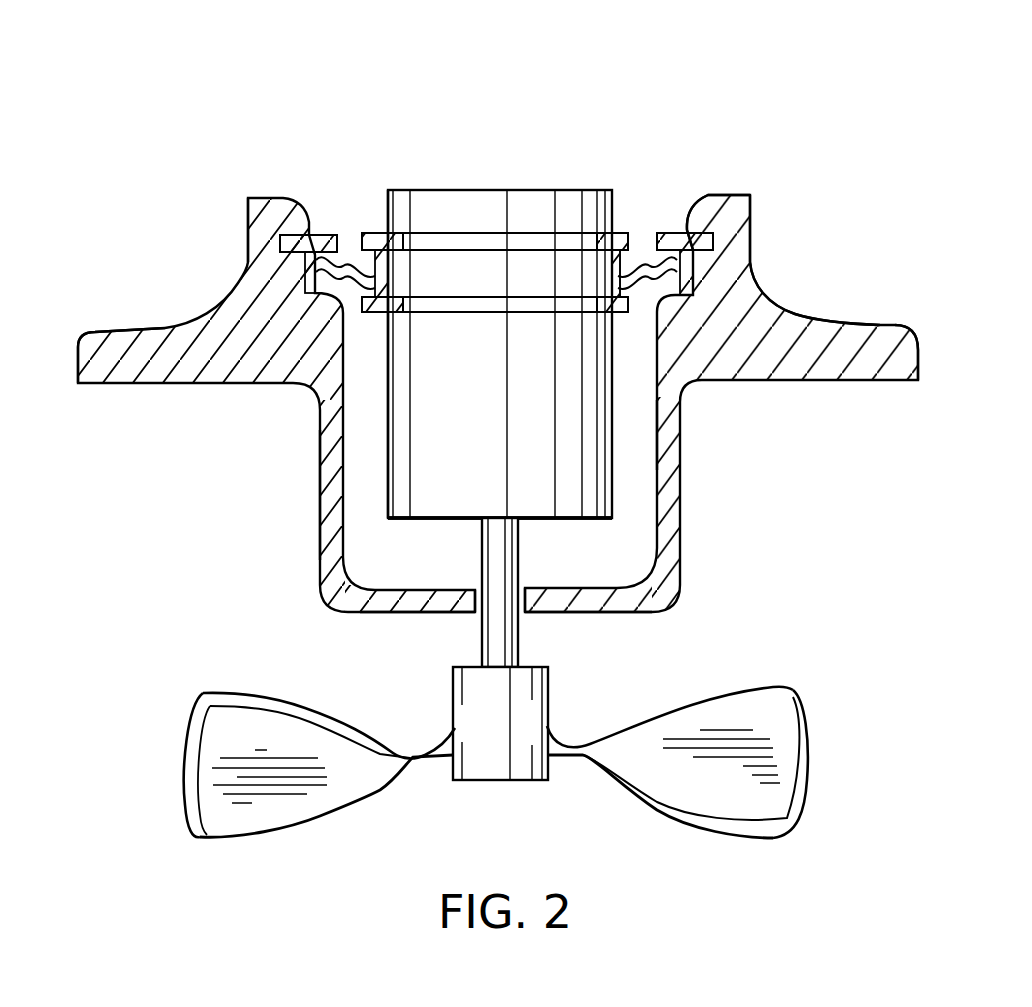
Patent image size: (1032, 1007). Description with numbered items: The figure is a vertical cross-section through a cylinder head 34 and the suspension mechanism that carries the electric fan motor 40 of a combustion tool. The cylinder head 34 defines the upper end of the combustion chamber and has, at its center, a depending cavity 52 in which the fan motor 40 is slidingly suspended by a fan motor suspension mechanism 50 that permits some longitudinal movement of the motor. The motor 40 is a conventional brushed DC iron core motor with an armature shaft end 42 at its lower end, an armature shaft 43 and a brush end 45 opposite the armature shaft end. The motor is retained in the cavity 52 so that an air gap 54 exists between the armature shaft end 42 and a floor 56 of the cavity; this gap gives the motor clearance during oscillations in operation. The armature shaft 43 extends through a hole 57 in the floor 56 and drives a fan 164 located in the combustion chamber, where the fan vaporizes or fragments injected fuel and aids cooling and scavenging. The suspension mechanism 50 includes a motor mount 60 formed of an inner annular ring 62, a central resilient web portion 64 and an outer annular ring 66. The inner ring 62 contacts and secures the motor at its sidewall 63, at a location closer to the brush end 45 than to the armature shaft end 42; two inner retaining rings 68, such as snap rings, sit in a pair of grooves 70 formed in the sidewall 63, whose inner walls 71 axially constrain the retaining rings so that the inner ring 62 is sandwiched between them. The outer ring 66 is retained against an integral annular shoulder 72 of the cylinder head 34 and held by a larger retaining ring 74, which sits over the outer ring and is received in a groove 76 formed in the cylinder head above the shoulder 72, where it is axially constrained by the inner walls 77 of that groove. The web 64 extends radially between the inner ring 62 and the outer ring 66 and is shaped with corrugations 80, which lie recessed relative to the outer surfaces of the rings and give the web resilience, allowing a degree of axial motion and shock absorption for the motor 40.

The cylinder head 34 is at (920, 363).
The electric fan motor 40 is at (657, 475).
The armature shaft end 42 is at (585, 520).
The armature shaft 43 is at (475, 568).
The brush end 45 is at (585, 188).
The fan motor suspension mechanism 50 is at (267, 174).
The depending cavity 52 is at (633, 433).
The air gap 54 is at (657, 605).
The floor 56 is at (393, 612).
The hole 57 is at (518, 603).
The motor mount 60 is at (283, 385).
The inner annular ring 62 is at (632, 262).
The sidewall 63 is at (330, 516).
The resilient web portion 64 is at (348, 252).
The outer annular ring 66 is at (757, 268).
The inner retaining rings 68 is at (618, 250).
The grooves 70 is at (438, 243).
The inner walls 71 is at (395, 240).
The annular shoulder 72 is at (762, 302).
The retaining ring 74 is at (325, 232).
The groove 76 is at (300, 258).
The inner walls 77 is at (697, 238).
The corrugations 80 is at (647, 288).
The fan 164 is at (772, 833).